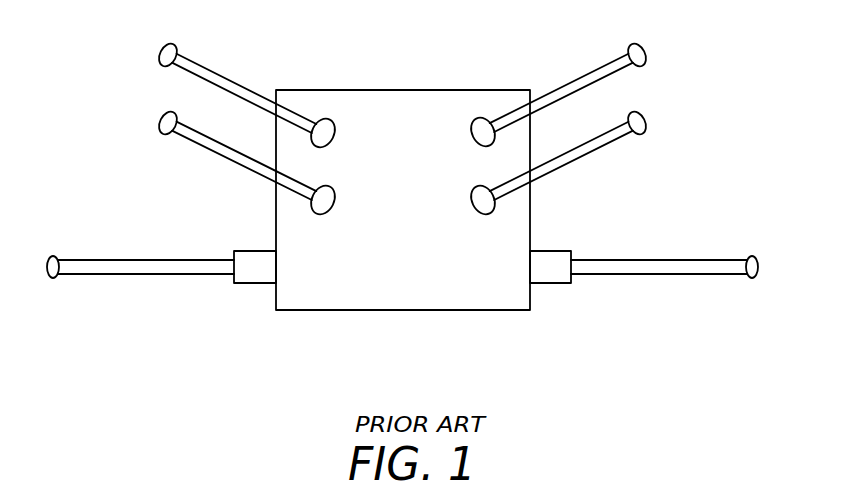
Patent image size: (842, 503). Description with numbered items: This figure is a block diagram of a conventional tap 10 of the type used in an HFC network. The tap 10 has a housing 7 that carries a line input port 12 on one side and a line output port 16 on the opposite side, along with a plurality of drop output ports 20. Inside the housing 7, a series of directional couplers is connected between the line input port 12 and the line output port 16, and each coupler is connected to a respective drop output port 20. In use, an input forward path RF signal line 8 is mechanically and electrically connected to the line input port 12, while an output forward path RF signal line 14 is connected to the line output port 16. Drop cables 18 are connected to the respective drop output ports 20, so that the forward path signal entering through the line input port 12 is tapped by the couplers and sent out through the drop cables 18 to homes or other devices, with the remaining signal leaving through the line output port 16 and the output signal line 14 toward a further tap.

The tap 10 is at (421, 89).
The housing 7 is at (402, 311).
The input forward path RF signal line 8 is at (148, 275).
The line input port 12 is at (256, 284).
The output forward path RF signal line 14 is at (658, 275).
The line output port 16 is at (551, 284).
The drop cables 18 is at (228, 75).
The drop output ports 20 is at (485, 119).